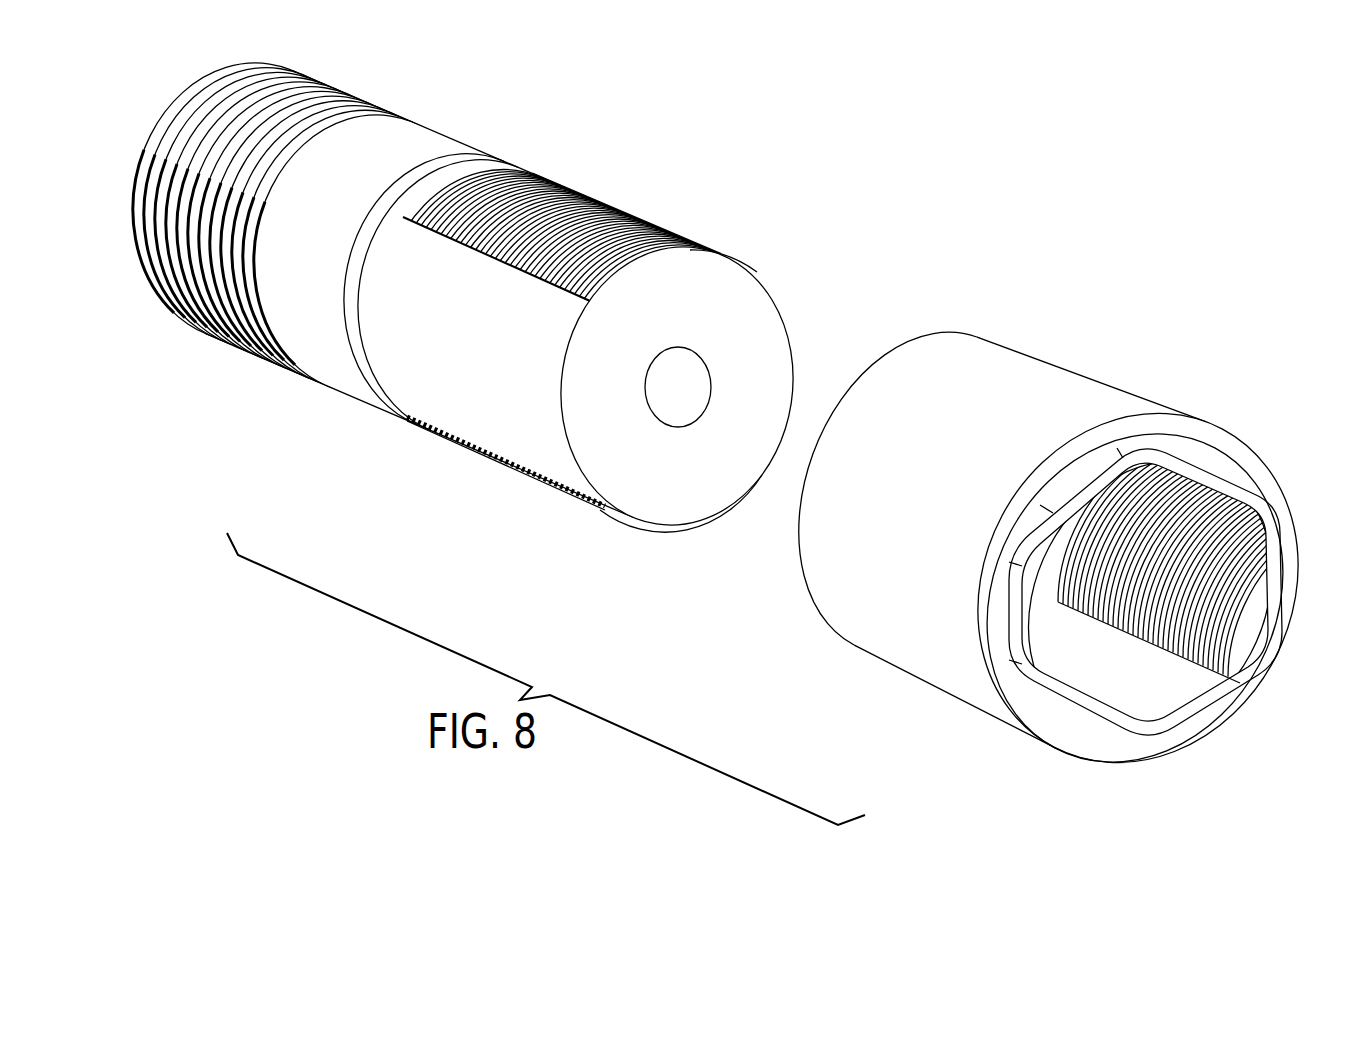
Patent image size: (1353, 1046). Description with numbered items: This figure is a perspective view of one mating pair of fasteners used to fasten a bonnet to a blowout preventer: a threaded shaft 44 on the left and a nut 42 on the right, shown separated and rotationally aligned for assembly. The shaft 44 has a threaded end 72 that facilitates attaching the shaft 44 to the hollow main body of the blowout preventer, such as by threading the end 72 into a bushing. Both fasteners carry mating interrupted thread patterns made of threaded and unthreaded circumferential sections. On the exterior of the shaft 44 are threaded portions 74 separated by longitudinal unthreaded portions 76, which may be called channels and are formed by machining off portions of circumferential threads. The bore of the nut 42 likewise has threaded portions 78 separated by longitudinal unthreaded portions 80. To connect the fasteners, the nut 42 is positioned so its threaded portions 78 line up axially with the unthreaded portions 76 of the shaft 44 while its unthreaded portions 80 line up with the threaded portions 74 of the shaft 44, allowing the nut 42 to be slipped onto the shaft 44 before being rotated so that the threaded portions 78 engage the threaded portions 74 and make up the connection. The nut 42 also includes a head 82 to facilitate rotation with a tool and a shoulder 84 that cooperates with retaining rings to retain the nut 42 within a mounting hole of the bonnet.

The nut 42 is at (1045, 358).
The threaded shaft 44 is at (463, 135).
The threaded end 72 is at (210, 320).
The threaded portions 74 is at (668, 225).
The longitudinal unthreaded portions 76 is at (790, 317).
The threaded portions 78 is at (1250, 557).
The longitudinal unthreaded portions 80 is at (1078, 513).
The head 82 is at (1018, 603).
The shoulder 84 is at (992, 580).